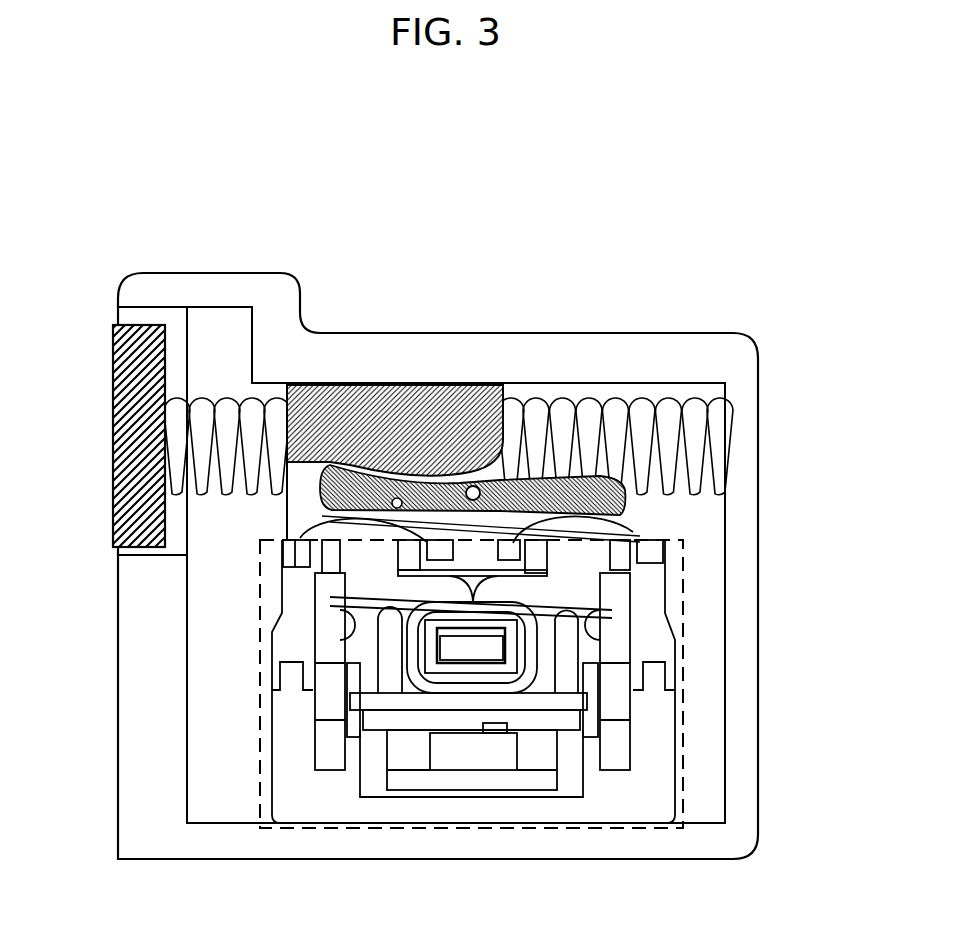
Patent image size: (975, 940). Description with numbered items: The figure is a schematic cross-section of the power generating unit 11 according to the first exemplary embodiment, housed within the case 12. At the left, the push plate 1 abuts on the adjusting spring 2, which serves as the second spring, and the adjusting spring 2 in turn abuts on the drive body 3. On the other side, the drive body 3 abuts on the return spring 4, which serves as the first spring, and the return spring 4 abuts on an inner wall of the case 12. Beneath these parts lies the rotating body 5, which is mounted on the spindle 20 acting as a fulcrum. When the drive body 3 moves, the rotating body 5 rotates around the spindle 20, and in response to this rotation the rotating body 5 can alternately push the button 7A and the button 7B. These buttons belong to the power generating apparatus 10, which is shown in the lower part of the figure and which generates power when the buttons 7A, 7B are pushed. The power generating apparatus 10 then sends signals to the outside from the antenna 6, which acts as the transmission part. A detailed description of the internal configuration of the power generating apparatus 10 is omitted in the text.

The push plate 1 is at (128, 390).
The adjusting spring 2 is at (225, 410).
The drive body 3 is at (420, 407).
The return spring 4 is at (670, 405).
The rotating body 5 is at (322, 497).
The antenna 6 is at (477, 788).
The button 7A is at (397, 505).
The button 7B is at (648, 540).
The power generating apparatus 10 is at (683, 748).
The power generating unit 11 is at (575, 227).
The case 12 is at (560, 367).
The spindle 20 is at (473, 500).